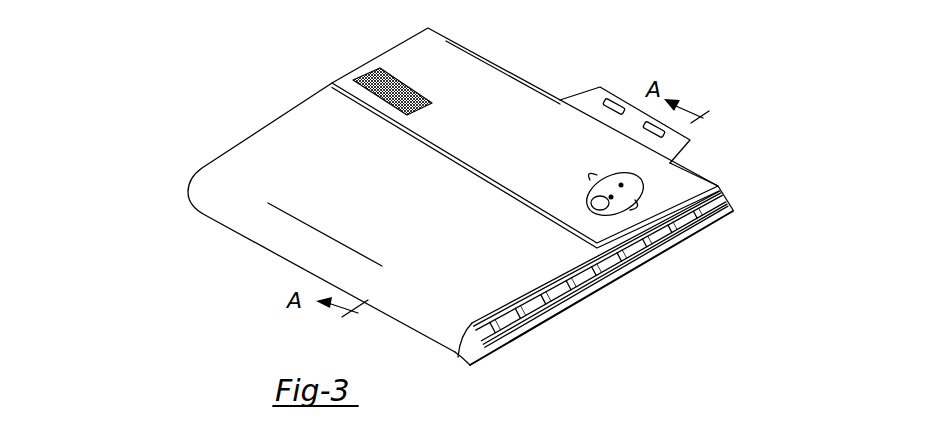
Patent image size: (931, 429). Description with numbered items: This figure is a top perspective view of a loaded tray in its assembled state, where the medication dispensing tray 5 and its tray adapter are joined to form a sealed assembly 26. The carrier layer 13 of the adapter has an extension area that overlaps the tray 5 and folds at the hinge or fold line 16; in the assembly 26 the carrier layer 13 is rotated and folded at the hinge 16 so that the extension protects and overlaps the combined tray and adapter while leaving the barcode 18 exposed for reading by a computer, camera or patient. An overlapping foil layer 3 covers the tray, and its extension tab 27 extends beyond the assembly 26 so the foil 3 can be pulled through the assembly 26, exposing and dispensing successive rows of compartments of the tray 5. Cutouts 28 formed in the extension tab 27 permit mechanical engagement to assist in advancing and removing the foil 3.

The foil layer 3 is at (665, 154).
The medication dispensing tray 5 is at (512, 327).
The carrier layer 13 is at (310, 145).
The hinge 16 is at (445, 38).
The barcode 18 is at (362, 72).
The sealed assembly 26 is at (229, 261).
The extension tab 27 is at (583, 98).
The cutouts 28 is at (620, 100).